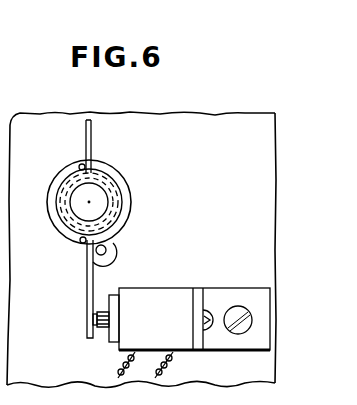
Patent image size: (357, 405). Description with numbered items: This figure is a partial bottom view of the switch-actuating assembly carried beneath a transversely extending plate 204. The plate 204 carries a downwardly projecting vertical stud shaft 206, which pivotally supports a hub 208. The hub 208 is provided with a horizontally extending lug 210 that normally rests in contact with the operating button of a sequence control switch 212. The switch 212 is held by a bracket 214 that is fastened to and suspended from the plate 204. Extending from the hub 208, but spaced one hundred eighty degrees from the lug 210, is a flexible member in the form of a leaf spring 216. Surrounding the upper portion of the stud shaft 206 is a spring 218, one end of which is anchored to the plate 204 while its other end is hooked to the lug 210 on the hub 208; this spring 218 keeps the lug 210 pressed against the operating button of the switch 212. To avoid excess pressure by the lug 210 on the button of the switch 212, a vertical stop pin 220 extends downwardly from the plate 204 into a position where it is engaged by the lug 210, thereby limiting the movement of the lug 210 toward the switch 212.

The plate 204 is at (219, 115).
The stud shaft 206 is at (98, 200).
The hub 208 is at (64, 186).
The lug 210 is at (86, 297).
The sequence control switch 212 is at (126, 343).
The bracket 214 is at (222, 293).
The leaf spring 216 is at (93, 138).
The spring 218 is at (80, 242).
The stop pin 220 is at (107, 252).